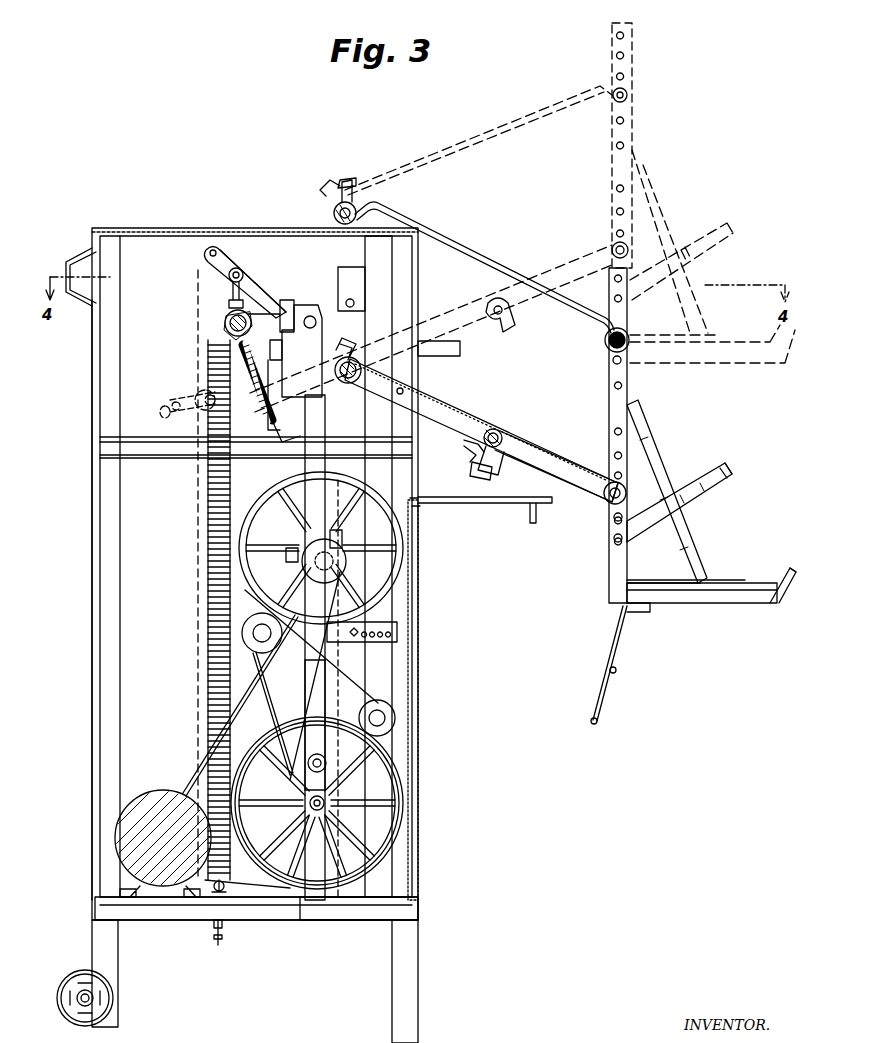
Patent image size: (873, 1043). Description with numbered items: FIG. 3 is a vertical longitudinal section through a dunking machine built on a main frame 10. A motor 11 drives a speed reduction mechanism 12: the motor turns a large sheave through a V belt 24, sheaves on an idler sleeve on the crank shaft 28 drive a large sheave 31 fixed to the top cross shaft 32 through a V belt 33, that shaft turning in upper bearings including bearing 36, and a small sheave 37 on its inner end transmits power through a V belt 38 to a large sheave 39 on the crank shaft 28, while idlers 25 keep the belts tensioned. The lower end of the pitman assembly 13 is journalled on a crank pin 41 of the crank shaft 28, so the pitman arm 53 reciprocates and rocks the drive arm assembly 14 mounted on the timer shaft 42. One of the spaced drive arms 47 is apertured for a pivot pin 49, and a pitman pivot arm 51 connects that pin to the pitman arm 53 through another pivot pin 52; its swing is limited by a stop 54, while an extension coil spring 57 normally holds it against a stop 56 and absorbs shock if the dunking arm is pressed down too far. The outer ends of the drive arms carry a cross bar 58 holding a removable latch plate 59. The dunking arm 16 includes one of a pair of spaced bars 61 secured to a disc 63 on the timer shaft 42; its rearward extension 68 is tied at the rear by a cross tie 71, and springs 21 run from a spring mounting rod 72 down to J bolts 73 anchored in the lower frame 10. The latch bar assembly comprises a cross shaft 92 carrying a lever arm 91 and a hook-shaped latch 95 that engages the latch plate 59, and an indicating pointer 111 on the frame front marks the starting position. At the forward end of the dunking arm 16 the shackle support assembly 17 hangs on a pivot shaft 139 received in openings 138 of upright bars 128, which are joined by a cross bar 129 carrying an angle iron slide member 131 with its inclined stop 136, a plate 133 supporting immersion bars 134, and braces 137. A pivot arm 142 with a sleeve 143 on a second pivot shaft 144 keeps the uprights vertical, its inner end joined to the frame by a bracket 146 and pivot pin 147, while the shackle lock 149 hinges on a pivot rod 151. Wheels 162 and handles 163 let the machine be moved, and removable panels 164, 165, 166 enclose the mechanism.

The main frame 10 is at (405, 944).
The motor 11 is at (116, 838).
The speed reduction mechanism 12 is at (392, 832).
The pitman assembly 13 is at (320, 672).
The drive arm assembly 14 is at (455, 410).
The dunking arm 16 is at (555, 455).
The shackle support assembly 17 is at (715, 603).
The springs 21 is at (208, 618).
The V belt 24 is at (290, 900).
The idlers 25 is at (242, 636).
The crank shaft 28 is at (308, 805).
The large sheave 31 is at (402, 552).
The top cross shaft 32 is at (333, 565).
The V belt 33 is at (392, 637).
The upper bearing 36 is at (340, 540).
The small sheave 37 is at (352, 535).
The V belt 38 is at (236, 705).
The large sheave 39 is at (378, 860).
The crank pin 41 is at (326, 763).
The timer shaft 42 is at (350, 384).
The drive arm 47 is at (228, 334).
The pivot pin 49 is at (225, 320).
The pitman pivot arm 51 is at (286, 300).
The pivot pin 52 is at (314, 316).
The pitman arm 53 is at (310, 708).
The stop 54 is at (316, 305).
The stop 56 is at (282, 349).
The extension coil spring 57 is at (274, 390).
The cross bar 58 is at (466, 442).
The removable latch plate 59 is at (466, 456).
The bar 61 is at (606, 500).
The disc 63 is at (404, 368).
The rearward extension 68 is at (224, 262).
The cross tie 71 is at (208, 256).
The spring mounting rod 72 is at (230, 285).
The J bolts 73 is at (224, 940).
The lever arm 91 is at (478, 478).
The cross shaft 92 is at (500, 440).
The hook-shaped latch 95 is at (498, 462).
The indicating pointer 111 is at (460, 350).
The upright bars 128 is at (612, 590).
The cross bar 129 is at (632, 612).
The angle iron slide member 131 is at (745, 585).
The plate 133 is at (655, 583).
The immersion bars 134 is at (598, 718).
The inclined stop 136 is at (800, 566).
The braces 137 is at (640, 430).
The openings 138 is at (614, 520).
The pivot shaft 139 is at (662, 476).
The pivot arm 142 is at (490, 232).
The sleeve 143 is at (613, 358).
The second pivot shaft 144 is at (606, 340).
The bracket 146 is at (334, 210).
The pivot pin 147 is at (358, 220).
The shackle lock 149 is at (720, 480).
The pivot rod 151 is at (614, 543).
The wheels 162 is at (108, 1005).
The handles 163 is at (72, 258).
The removable panel 164 is at (92, 507).
The removable panel 165 is at (415, 622).
The removable panel 166 is at (176, 231).